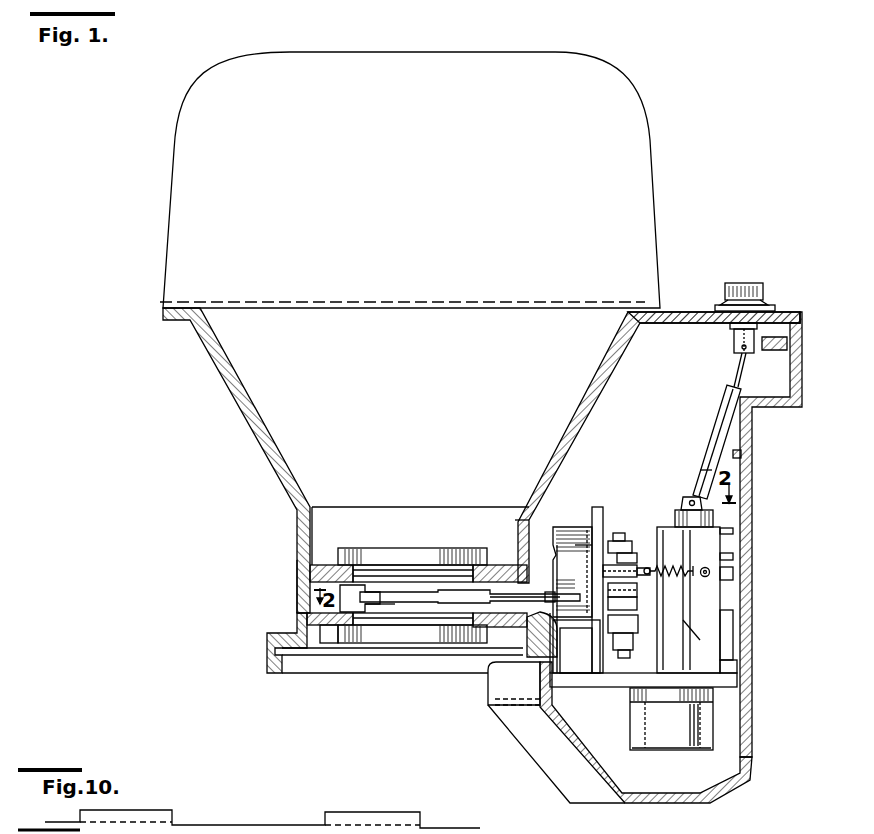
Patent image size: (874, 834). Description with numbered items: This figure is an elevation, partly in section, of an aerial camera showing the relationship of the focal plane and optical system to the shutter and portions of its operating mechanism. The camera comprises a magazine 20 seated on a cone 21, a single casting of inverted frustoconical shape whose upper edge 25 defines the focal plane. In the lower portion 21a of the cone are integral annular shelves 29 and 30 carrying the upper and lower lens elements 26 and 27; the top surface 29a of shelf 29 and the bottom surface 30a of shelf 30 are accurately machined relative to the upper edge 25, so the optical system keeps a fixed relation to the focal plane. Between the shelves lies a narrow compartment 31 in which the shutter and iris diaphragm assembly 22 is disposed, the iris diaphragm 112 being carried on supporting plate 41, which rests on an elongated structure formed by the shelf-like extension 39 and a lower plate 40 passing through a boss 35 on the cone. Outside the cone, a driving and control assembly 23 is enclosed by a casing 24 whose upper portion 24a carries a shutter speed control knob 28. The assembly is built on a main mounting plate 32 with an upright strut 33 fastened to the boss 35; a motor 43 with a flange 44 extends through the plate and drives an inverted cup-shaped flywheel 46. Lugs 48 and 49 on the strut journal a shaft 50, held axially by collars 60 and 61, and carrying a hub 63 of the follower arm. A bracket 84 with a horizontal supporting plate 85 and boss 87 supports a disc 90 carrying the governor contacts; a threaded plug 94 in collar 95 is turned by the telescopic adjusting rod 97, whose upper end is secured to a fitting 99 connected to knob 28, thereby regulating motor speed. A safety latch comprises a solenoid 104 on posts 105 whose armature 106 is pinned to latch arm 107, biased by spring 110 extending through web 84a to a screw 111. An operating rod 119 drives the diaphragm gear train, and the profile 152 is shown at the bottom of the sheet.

In FIG. 1, the magazine 20 is at (192, 150).
In FIG. 1, the cone 21 is at (243, 433).
In FIG. 1, the lower portion of the cone 21a is at (299, 533).
In FIG. 1, the shutter and iris diaphragm assembly 22 is at (371, 592).
In FIG. 1, the shutter blade and iris diaphragm driving and control assembly 23 is at (647, 495).
In FIG. 1, the casing 24 is at (752, 700).
In FIG. 1, the upper portion of the casing 24a is at (692, 312).
In FIG. 1, the upper edge of the cone 25 is at (376, 302).
In FIG. 1, the upper lens element 26 is at (416, 556).
In FIG. 1, the lower lens element 27 is at (404, 645).
In FIG. 1, the shutter speed control knob 28 is at (748, 285).
In FIG. 1, the shelf 29 is at (320, 573).
In FIG. 1, the top surface of shelf 29 29a is at (336, 565).
In FIG. 1, the shelf 30 is at (318, 618).
In FIG. 1, the bottom surface of shelf 30 30a is at (333, 645).
In FIG. 1, the compartment 31 is at (352, 614).
In FIG. 1, the main mounting plate 32 is at (618, 688).
In FIG. 1, the upright strut 33 is at (599, 520).
In FIG. 1, the boss 35 is at (571, 530).
In FIG. 1, the shelf-like extension 39 is at (548, 593).
In FIG. 1, the lower plate 40 is at (540, 612).
In FIG. 1, the supporting plate 41 is at (504, 596).
In FIG. 1, the motor 43 is at (665, 740).
In FIG. 1, the flange 44 is at (737, 666).
In FIG. 1, the flywheel 46 is at (734, 635).
In FIG. 1, the lug 48 is at (619, 533).
In FIG. 1, the lug 49 is at (634, 635).
In FIG. 1, the shaft 50 is at (630, 555).
In FIG. 1, the collar 60 is at (637, 618).
In FIG. 1, the collar 61 is at (625, 655).
In FIG. 1, the hub 63 is at (637, 605).
In FIG. 1, the bracket 84 is at (712, 589).
In FIG. 1, the web 84a is at (707, 637).
In FIG. 1, the horizontal supporting plate 85 is at (734, 531).
In FIG. 1, the boss 87 is at (734, 573).
In FIG. 1, the disc 90 is at (734, 556).
In FIG. 1, the threaded plug 94 is at (690, 497).
In FIG. 1, the collar 95 is at (715, 521).
In FIG. 1, the adjusting rod 97 is at (722, 413).
In FIG. 1, the fitting 99 is at (734, 342).
In FIG. 1, the solenoid 104 is at (585, 543).
In FIG. 1, the posts 105 is at (600, 678).
In FIG. 1, the armature 106 is at (604, 572).
In FIG. 1, the latch arm 107 is at (650, 569).
In FIG. 1, the spring 110 is at (670, 577).
In FIG. 1, the screw 111 is at (705, 567).
In FIG. 1, the iris diaphragm 112 is at (379, 606).
In FIG. 1, the operating rod 119 is at (712, 470).
In FIG. 10, the cam lobe 152 is at (152, 810).